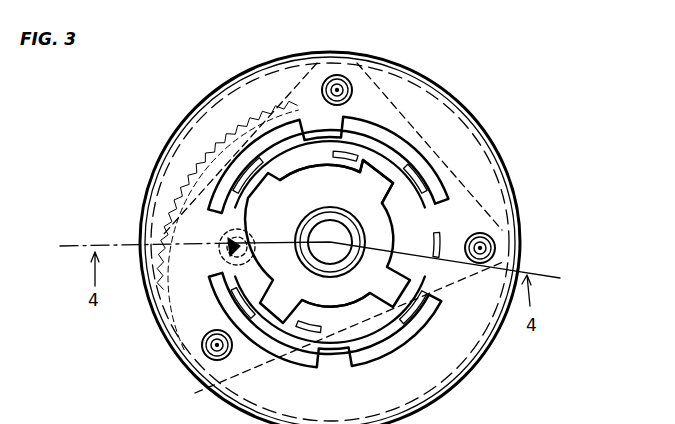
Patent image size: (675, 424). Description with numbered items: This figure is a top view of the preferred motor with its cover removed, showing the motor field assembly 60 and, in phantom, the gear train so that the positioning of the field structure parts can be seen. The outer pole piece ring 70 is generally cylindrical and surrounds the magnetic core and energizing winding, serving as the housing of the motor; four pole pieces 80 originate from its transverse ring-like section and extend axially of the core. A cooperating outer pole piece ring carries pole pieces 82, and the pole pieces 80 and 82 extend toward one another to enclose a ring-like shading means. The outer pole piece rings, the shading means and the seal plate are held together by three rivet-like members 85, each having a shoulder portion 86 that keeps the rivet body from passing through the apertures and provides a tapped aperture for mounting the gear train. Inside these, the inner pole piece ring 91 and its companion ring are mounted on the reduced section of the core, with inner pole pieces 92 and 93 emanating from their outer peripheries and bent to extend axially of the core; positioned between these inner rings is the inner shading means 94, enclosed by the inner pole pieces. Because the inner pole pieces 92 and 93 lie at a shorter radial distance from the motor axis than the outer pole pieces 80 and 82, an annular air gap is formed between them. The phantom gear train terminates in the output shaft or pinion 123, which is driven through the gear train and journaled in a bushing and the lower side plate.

The motor field assembly 60 is at (372, 394).
The outer pole piece ring 70 is at (203, 122).
The pole pieces 80 is at (433, 223).
The pole pieces 82 is at (422, 175).
The rivet-like members 85 is at (340, 87).
The shoulder portion 86 is at (346, 77).
The inner pole piece ring 91 is at (321, 181).
The inner pole pieces 92 is at (319, 323).
The inner pole pieces 93 is at (262, 183).
The inner shading means 94 is at (400, 181).
The output shaft or pinion 123 is at (228, 262).